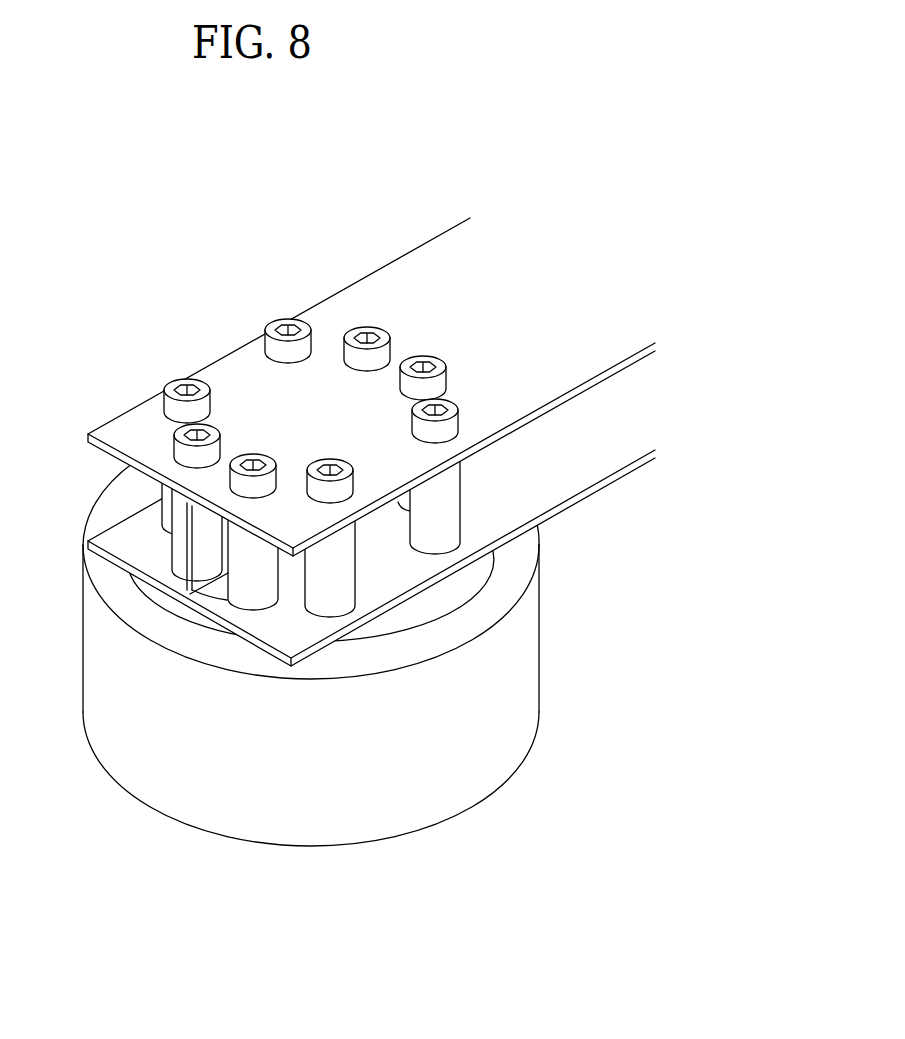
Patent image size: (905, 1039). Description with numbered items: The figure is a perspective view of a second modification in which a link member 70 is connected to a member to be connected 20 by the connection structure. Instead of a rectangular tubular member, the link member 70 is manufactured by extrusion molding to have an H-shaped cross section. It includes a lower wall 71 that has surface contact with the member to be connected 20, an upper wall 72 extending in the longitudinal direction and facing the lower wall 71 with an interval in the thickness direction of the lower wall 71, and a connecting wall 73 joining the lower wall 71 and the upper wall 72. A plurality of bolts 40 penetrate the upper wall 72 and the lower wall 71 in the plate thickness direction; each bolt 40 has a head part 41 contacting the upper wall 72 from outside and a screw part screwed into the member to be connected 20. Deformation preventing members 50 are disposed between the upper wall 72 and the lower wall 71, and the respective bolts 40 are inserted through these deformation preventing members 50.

The member to be connected 20 is at (453, 580).
The bolt 40 is at (325, 358).
The head part 41 is at (262, 335).
The deformation preventing member 50 is at (140, 538).
The link member 70 is at (345, 421).
The lower wall 71 is at (180, 605).
The upper wall 72 is at (407, 283).
The connecting wall 73 is at (205, 563).